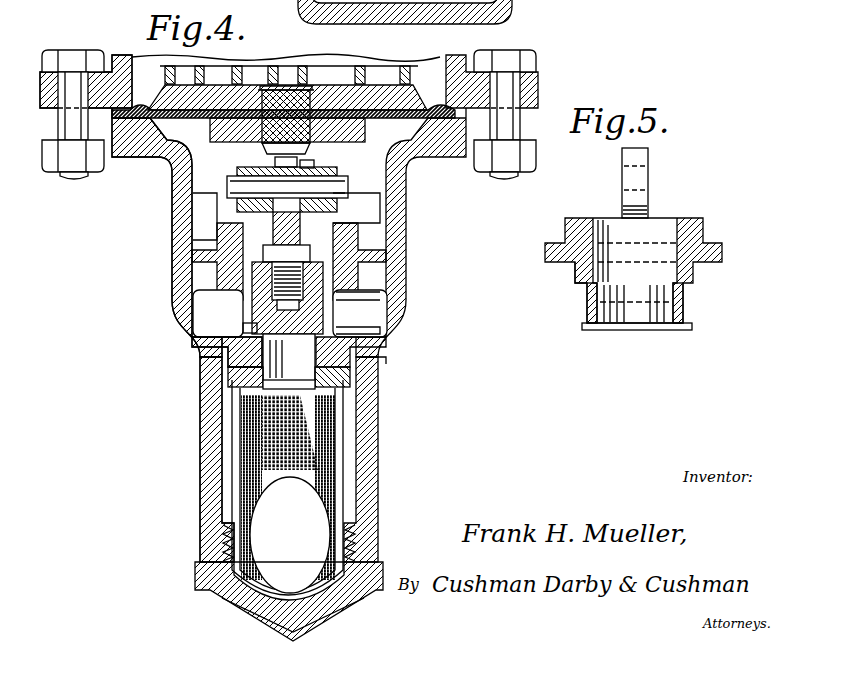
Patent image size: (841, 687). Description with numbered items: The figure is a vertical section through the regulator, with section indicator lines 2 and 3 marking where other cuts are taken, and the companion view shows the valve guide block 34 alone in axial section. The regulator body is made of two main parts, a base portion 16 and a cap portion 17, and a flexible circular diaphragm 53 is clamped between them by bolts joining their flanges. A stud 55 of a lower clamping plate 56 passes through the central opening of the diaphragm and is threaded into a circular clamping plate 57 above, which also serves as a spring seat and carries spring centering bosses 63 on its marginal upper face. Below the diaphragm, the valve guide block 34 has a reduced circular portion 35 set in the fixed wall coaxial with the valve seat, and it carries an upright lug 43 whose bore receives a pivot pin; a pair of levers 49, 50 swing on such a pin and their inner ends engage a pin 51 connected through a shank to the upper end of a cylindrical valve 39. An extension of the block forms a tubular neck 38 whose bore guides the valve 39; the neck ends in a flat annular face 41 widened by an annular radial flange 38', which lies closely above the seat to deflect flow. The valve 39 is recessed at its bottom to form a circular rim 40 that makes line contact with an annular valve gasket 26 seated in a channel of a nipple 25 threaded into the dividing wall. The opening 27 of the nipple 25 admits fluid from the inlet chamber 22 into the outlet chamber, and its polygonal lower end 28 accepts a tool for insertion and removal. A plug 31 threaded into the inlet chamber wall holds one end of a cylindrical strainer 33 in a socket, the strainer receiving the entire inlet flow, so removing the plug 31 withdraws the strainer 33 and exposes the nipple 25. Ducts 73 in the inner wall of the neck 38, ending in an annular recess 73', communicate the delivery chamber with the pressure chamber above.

In FIG. 4, the section line 2- 2 is at (157, 170).
In FIG. 4, the section line 3- 3 is at (160, 297).
In FIG. 4, the base portion 16 is at (180, 232).
In FIG. 4, the cap portion 17 is at (455, 57).
In FIG. 4, the inlet chamber 22 is at (228, 440).
In FIG. 4, the nipple 25 is at (237, 350).
In FIG. 4, the annular valve gasket 26 is at (245, 366).
In FIG. 4, the opening of the nipple 27 is at (375, 362).
In FIG. 4, the lower end of the passage 28 is at (263, 388).
In FIG. 4, the plug 31 is at (210, 580).
In FIG. 4, the cylindrical strainer 33 is at (335, 428).
In FIG. 4, the valve guide block 34 is at (375, 250).
In FIG. 5, the valve guide block 34 is at (722, 255).
In FIG. 5, the reduced circular portion 35 is at (575, 275).
In FIG. 4, the extension of the block 38 is at (391, 298).
In FIG. 5, the extension of the block 38 is at (609, 316).
In FIG. 4, the annular radial flange 38' is at (220, 313).
In FIG. 5, the annular radial flange 38' is at (660, 326).
In FIG. 4, the cylindrical valve 39 is at (258, 285).
In FIG. 4, the circular edge or rim 40 is at (266, 336).
In FIG. 4, the flat annular face 41 is at (243, 333).
In FIG. 5, the upright lug 43 is at (650, 200).
In FIG. 4, the lever 49 is at (338, 172).
In FIG. 4, the lever 50 is at (253, 163).
In FIG. 4, the pin 51 is at (232, 186).
In FIG. 4, the flexible circular diaphragm 53 is at (432, 108).
In FIG. 4, the stud 55 is at (283, 103).
In FIG. 4, the clamping plate 56 is at (318, 142).
In FIG. 4, the circular clamping plate 57 is at (350, 90).
In FIG. 4, the spring centering bosses 63 is at (400, 85).
In FIG. 4, the duct 73 is at (356, 306).
In FIG. 5, the duct 73 is at (635, 320).
In FIG. 4, the annular recess 73' is at (358, 331).
In FIG. 5, the annular recess 73' is at (667, 320).